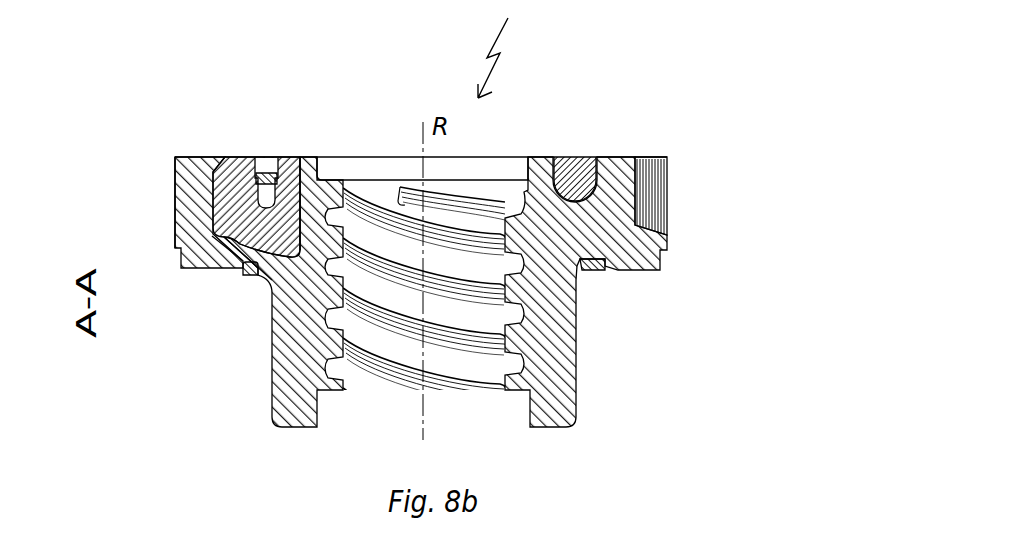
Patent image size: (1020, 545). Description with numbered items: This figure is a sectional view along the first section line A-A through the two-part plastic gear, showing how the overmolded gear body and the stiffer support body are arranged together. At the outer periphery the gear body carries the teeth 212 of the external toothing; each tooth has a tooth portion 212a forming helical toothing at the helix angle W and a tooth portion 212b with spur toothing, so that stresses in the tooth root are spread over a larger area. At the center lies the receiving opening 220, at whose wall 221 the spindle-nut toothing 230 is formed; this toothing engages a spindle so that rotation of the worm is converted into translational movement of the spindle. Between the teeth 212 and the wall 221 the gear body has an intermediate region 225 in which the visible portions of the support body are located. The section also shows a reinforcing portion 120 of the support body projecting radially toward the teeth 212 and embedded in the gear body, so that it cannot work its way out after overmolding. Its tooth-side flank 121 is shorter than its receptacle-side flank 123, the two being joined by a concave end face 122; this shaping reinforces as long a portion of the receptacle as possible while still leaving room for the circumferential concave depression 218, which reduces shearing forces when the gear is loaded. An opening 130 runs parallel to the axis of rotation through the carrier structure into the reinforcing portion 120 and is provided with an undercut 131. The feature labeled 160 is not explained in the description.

The reinforcing portion 120 is at (242, 195).
The tooth-side flank 121 is at (227, 222).
The concave end face 122 is at (247, 267).
The receptacle-side flank 123 is at (300, 185).
The opening 130 is at (265, 158).
The undercut 131 is at (278, 173).
The knurled outer surface 160 is at (583, 160).
The tooth 212 is at (200, 183).
The tooth portion 212a is at (176, 182).
The tooth portion 212b is at (180, 258).
The circumferential concave depression 218 is at (257, 280).
The receiving opening 220 is at (488, 172).
The wall of the receiving opening 221 is at (540, 167).
The intermediate region 225 is at (577, 217).
The spindle-nut toothing 230 is at (335, 198).